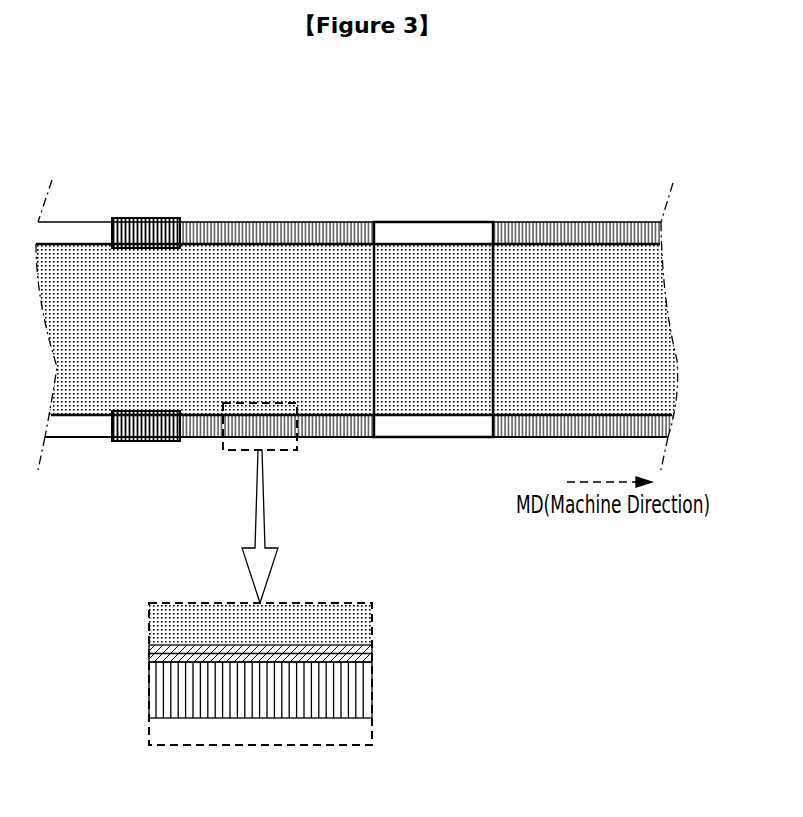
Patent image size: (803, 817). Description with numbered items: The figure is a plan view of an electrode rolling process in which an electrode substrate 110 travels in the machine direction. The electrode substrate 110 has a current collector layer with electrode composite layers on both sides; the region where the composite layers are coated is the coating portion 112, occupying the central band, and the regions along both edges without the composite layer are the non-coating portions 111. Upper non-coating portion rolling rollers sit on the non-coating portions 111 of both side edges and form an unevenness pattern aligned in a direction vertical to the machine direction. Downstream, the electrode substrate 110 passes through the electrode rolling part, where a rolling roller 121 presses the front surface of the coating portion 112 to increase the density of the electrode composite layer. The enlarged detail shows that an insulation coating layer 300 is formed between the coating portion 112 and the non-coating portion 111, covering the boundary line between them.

The electrode substrate 110 is at (377, 129).
The non-coating portion 111 is at (360, 223).
The coating portion 112 is at (293, 288).
The rolling roller 121 is at (432, 430).
The insulation coating layer 300 is at (182, 650).